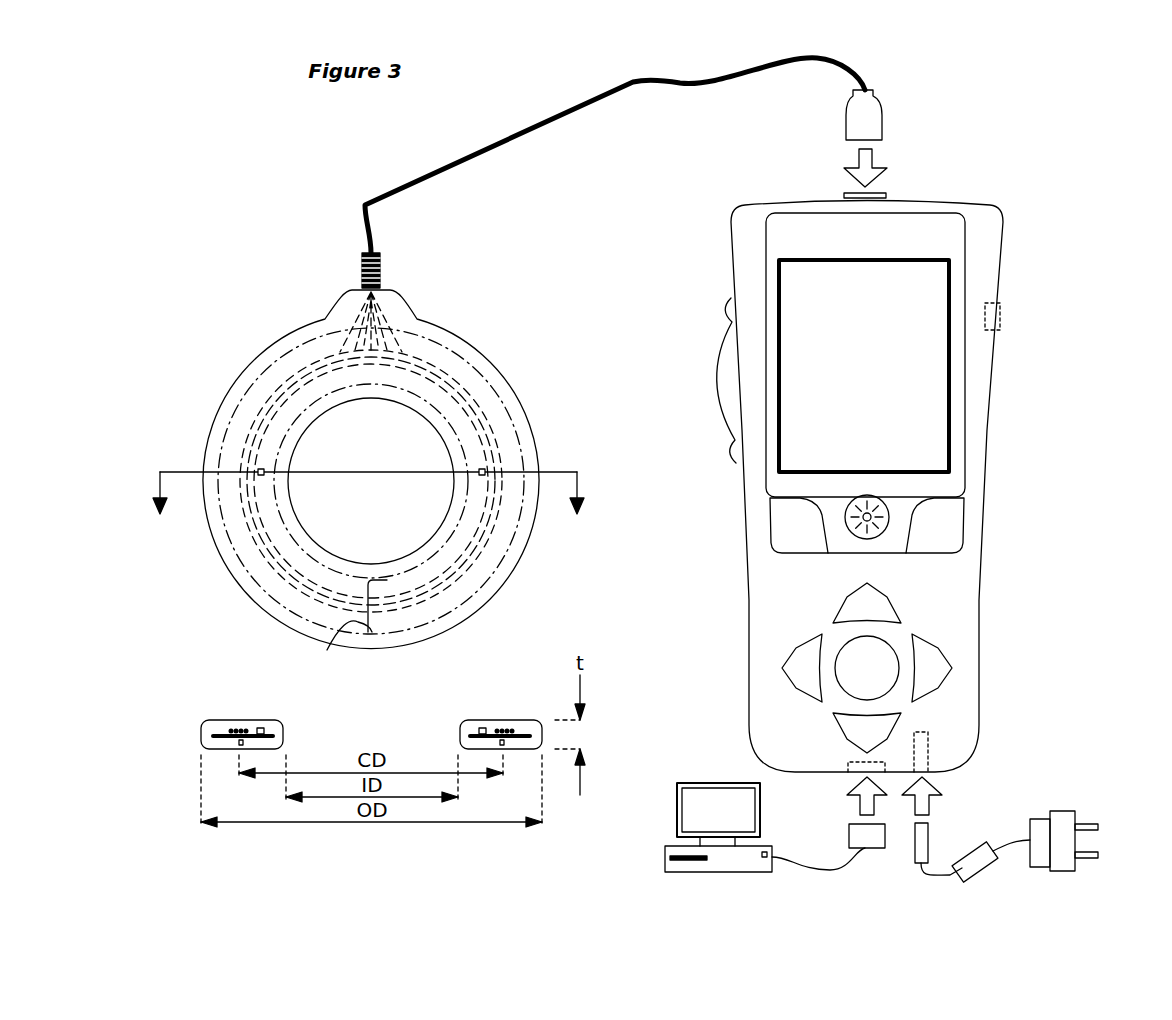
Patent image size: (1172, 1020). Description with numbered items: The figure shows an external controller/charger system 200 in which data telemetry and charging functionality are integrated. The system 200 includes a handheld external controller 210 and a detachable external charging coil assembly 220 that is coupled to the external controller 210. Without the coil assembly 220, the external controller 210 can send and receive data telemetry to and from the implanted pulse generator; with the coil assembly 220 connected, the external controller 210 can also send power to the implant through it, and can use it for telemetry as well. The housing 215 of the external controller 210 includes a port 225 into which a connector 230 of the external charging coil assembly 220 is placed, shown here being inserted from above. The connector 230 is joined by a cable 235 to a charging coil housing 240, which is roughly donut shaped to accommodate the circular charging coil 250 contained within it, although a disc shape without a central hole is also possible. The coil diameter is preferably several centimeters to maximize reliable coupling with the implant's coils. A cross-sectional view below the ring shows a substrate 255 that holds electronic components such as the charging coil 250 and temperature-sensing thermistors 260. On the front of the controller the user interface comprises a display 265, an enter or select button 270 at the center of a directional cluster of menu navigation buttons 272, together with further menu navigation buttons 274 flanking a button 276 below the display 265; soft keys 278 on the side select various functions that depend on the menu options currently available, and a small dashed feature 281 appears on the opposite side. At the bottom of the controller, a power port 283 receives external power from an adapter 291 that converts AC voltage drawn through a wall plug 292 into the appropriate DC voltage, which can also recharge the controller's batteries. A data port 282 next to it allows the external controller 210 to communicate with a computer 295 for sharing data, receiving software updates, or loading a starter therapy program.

The system 200 is at (220, 94).
The external controller 210 is at (1043, 409).
The housing 215 is at (1010, 272).
The external charging coil assembly 220 is at (473, 297).
The port 225 is at (880, 190).
The connector 230 is at (872, 120).
The cable 235 is at (380, 187).
The charging coil housing 240 is at (255, 358).
The charging coil 250 is at (258, 548).
The substrate 255 is at (528, 713).
The temperature-sensing thermistors 260 is at (261, 476).
The display 265 is at (289, 413).
The select button 270 is at (867, 668).
The menu navigation buttons 272 is at (875, 603).
The menu navigation buttons 274 is at (800, 550).
The power button 276 is at (875, 515).
The soft keys 278 is at (711, 380).
The side port 281 is at (994, 318).
The data port 282 is at (858, 762).
The power port 283 is at (925, 738).
The adapter 291 is at (968, 856).
The wall plug 292 is at (1065, 812).
The computer 295 is at (722, 805).